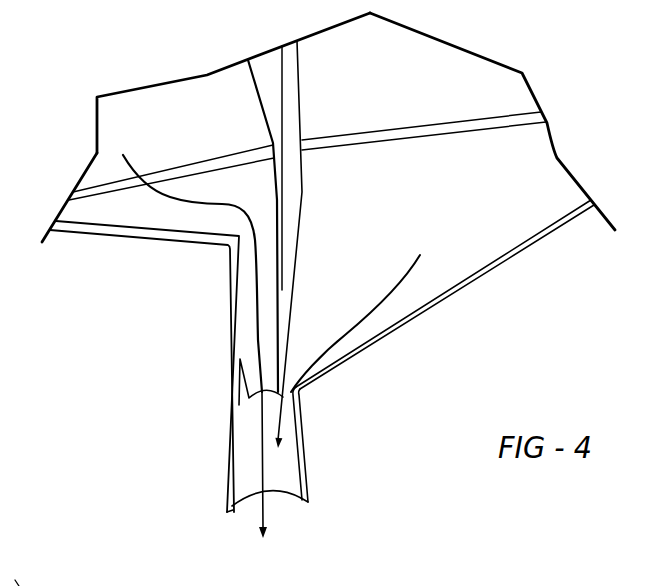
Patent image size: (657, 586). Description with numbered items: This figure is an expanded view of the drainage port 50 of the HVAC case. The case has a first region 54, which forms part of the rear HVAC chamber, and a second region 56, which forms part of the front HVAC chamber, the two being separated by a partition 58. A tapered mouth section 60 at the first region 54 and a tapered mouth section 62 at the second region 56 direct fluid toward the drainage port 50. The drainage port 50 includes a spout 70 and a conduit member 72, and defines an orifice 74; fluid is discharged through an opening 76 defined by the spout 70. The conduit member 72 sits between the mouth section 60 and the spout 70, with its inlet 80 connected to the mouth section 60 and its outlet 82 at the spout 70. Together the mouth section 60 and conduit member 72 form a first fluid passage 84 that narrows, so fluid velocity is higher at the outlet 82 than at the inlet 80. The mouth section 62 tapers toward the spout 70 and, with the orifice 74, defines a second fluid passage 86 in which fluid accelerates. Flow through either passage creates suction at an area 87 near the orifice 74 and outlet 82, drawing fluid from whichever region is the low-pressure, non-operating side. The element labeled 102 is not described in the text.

The drainage port 50 is at (182, 279).
The first region 54 is at (180, 106).
The second region 56 is at (442, 73).
The partition 58 is at (300, 100).
The mouth section 60 is at (130, 208).
The mouth section 62 is at (485, 240).
The spout 70 is at (228, 490).
The conduit member 72 is at (233, 300).
The orifice 74 is at (302, 391).
The opening 76 is at (292, 506).
The inlet 80 is at (268, 214).
The outlet 82 is at (256, 408).
The first fluid passage 84 is at (208, 203).
The second fluid passage 86 is at (388, 298).
The area 87 is at (254, 426).
The component 102 is at (15, 570).